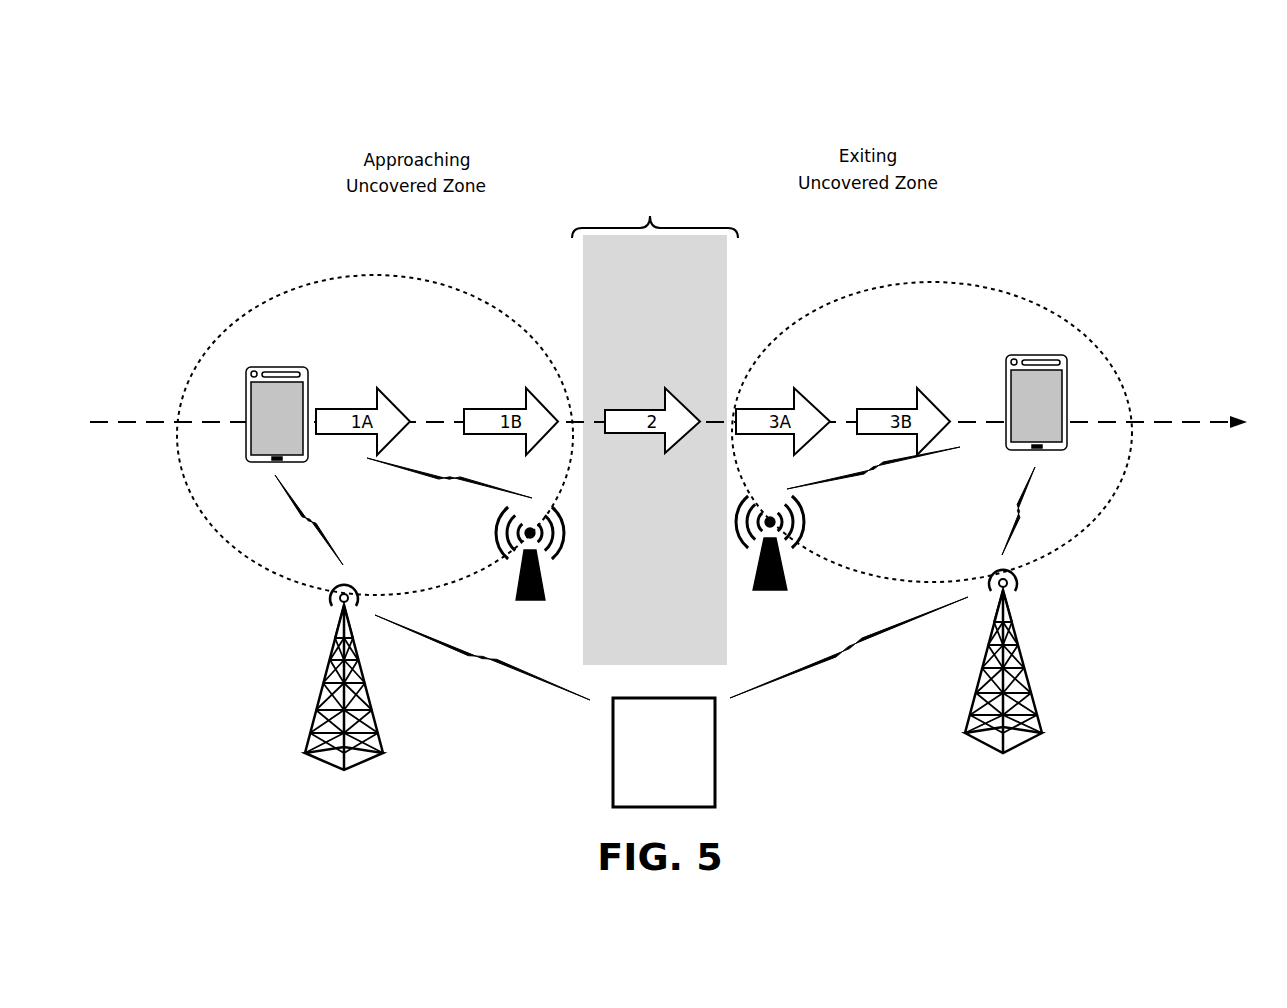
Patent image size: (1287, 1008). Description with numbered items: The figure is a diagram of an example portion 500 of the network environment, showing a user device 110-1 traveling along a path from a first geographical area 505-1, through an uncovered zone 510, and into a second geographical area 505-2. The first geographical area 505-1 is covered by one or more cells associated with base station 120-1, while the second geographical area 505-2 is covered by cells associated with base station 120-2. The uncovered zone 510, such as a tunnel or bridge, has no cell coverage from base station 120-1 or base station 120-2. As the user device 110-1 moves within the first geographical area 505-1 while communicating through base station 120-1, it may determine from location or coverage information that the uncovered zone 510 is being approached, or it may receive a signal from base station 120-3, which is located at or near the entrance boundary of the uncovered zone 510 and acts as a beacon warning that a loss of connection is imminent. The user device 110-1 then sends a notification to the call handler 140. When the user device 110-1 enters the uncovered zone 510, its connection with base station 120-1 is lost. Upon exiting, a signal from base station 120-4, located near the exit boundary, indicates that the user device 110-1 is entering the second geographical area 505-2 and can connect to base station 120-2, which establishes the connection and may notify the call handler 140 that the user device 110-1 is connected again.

The example portion of environment 500 is at (190, 75).
The first geographical area 505-1 is at (222, 330).
The second geographical area 505-2 is at (862, 286).
The uncovered zone 510 is at (636, 202).
The user device 110-1 is at (292, 366).
The base station 120-1 is at (309, 729).
The base station 120-2 is at (964, 721).
The base station 120-3 is at (549, 596).
The base station 120-4 is at (770, 592).
The call handler 140 is at (651, 788).